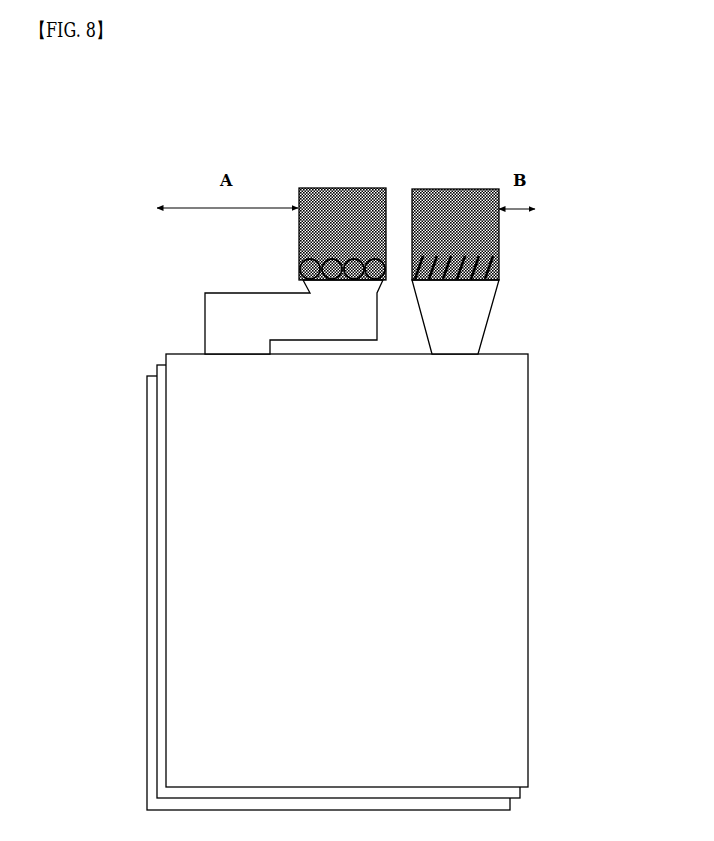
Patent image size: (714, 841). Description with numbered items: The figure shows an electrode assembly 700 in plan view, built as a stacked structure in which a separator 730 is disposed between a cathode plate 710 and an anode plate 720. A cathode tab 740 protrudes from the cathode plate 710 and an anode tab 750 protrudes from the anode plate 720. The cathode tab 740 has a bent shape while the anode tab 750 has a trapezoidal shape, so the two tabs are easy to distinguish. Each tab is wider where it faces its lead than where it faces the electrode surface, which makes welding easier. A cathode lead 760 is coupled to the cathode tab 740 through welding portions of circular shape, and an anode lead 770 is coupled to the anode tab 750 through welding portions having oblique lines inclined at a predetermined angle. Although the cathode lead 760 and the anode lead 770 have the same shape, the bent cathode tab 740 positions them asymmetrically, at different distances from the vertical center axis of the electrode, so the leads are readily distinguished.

The electrode assembly 700 is at (147, 144).
The cathode plate 710 is at (177, 528).
The anode plate 720 is at (153, 603).
The separator 730 is at (165, 565).
The cathode tab 740 is at (223, 305).
The anode tab 750 is at (483, 313).
The cathode lead 760 is at (307, 230).
The anode lead 770 is at (483, 230).